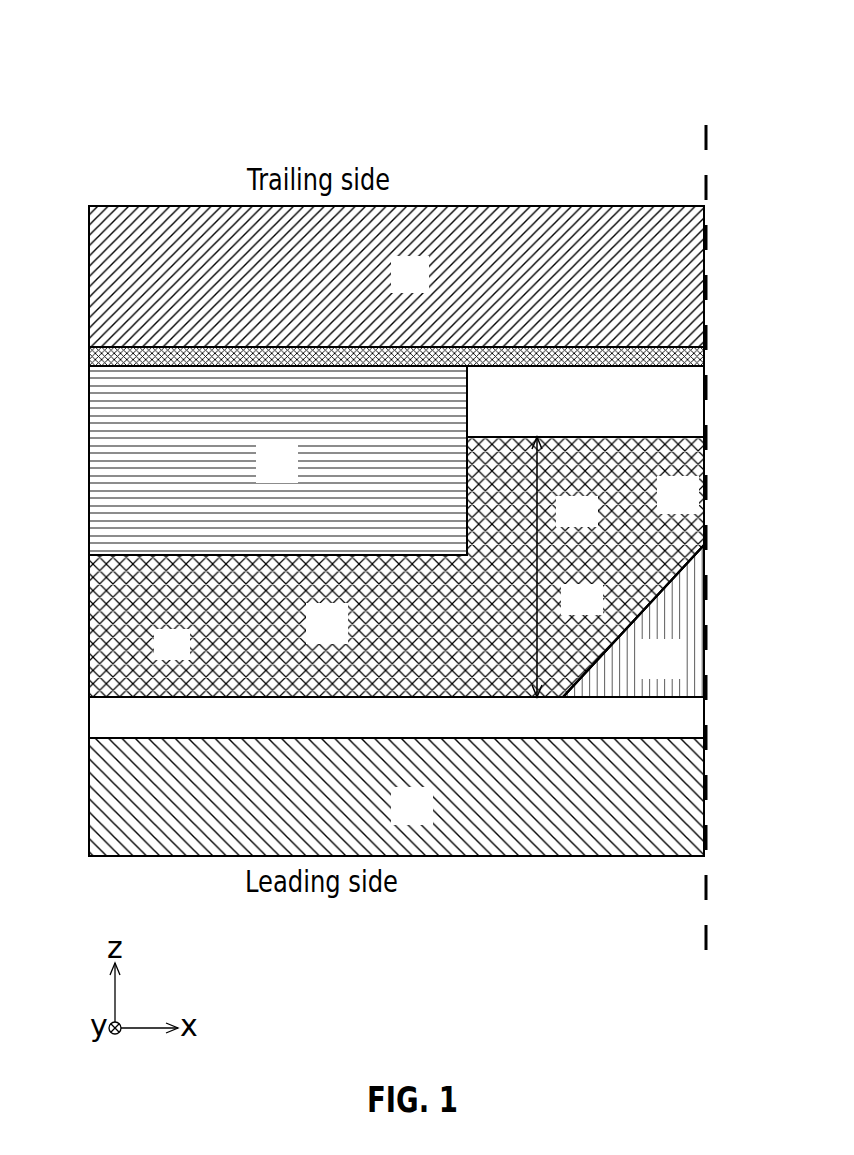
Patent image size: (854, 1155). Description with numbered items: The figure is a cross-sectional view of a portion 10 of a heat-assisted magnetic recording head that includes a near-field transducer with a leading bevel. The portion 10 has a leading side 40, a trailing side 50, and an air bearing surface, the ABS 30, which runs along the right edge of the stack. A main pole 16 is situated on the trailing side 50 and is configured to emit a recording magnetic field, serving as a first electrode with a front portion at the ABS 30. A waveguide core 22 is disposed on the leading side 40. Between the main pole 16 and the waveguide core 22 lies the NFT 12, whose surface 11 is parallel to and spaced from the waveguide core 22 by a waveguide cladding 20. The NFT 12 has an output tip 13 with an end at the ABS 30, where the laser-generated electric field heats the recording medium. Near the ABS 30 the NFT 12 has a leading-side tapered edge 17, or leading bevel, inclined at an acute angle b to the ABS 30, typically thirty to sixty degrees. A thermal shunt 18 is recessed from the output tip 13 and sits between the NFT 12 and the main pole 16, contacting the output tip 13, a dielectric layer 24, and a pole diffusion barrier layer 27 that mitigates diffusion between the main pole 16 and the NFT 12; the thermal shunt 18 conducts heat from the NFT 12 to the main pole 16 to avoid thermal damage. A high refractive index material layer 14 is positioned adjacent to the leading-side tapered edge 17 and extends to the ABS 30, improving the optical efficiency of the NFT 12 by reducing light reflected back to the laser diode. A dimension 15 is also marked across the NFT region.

The portion of HAMR head 10 is at (240, 72).
The surface 11 is at (231, 697).
The NFT 12 is at (344, 640).
The output tip 13 is at (695, 510).
The high refractive index material layer 14 is at (680, 673).
The pole height 15 is at (538, 570).
The main pole 16 is at (427, 290).
The leading-side tapered edge 17 is at (626, 620).
The thermal shunt 18 is at (294, 479).
The waveguide cladding 20 is at (429, 735).
The waveguide core 22 is at (429, 820).
The dielectric layer 24 is at (597, 420).
The pole diffusion barrier layer 27 is at (89, 361).
The ABS 30 is at (721, 297).
The leading side 40 is at (524, 872).
The trailing side 50 is at (522, 190).
The angle b is at (685, 582).